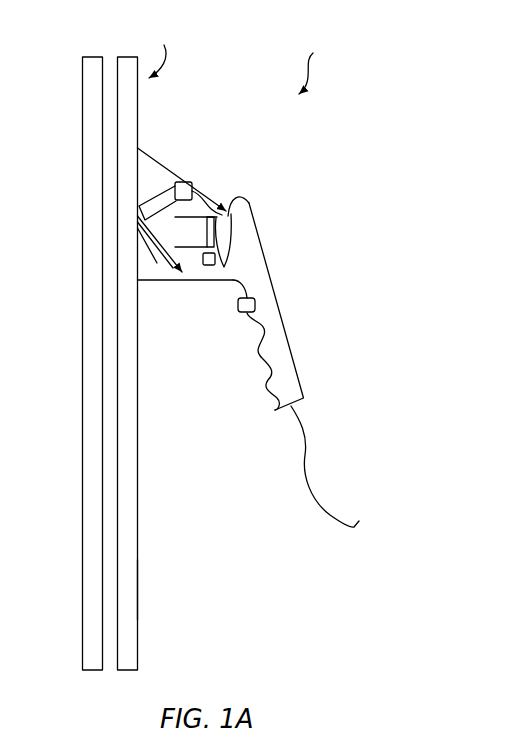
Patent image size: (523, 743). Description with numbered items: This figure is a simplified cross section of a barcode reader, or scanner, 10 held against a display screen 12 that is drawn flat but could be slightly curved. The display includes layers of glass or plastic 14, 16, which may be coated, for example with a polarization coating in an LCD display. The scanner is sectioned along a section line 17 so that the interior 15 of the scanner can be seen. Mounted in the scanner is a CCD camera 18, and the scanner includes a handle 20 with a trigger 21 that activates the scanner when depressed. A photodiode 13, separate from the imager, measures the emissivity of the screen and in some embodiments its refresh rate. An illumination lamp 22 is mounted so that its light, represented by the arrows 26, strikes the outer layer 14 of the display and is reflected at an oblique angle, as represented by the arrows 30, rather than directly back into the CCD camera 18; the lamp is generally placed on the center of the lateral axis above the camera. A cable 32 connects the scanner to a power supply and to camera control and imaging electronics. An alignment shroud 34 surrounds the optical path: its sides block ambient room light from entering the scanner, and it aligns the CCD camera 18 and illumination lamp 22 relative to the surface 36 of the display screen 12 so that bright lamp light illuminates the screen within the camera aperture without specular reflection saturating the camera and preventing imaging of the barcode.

The barcode reader 10 is at (317, 61).
The display screen 12 is at (154, 51).
The photodiode 13 is at (209, 265).
The outer layer of glass or plastic 14 is at (127, 57).
The interior of the scanner 15 is at (163, 194).
The layer of glass or plastic 16 is at (92, 57).
The section line 17 is at (229, 210).
The CCD camera 18 is at (233, 208).
The handle 20 is at (277, 298).
The trigger 21 is at (246, 313).
The illumination lamp 22 is at (183, 178).
The arrows representing light from the lamp 26 is at (174, 188).
The arrows representing reflected light 30 is at (145, 282).
The cable 32 is at (308, 438).
The alignment shroud 34 is at (149, 175).
The surface of the display screen 36 is at (139, 586).